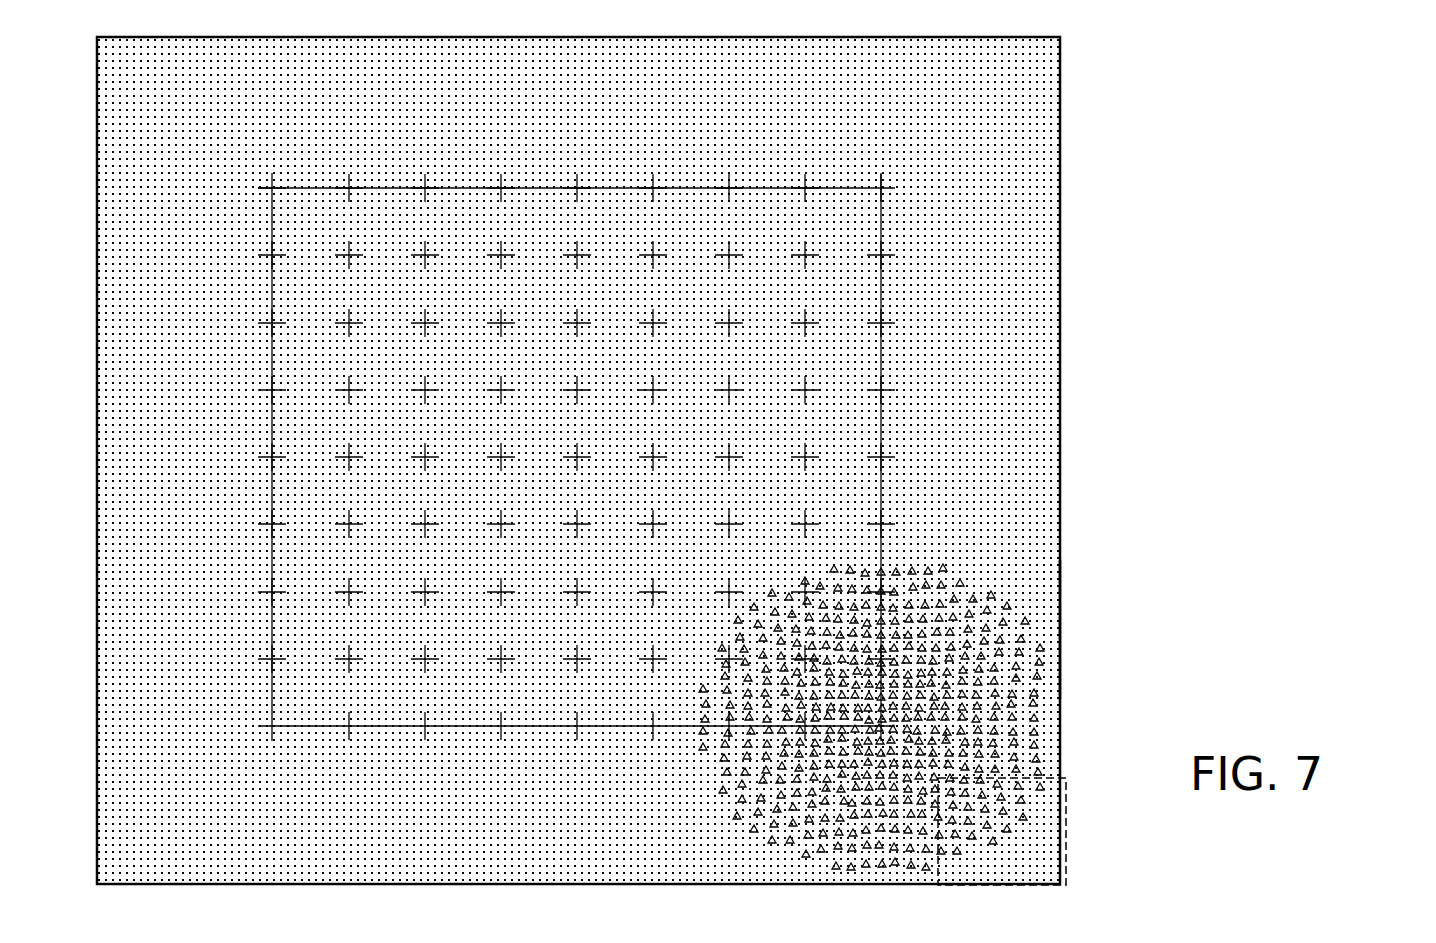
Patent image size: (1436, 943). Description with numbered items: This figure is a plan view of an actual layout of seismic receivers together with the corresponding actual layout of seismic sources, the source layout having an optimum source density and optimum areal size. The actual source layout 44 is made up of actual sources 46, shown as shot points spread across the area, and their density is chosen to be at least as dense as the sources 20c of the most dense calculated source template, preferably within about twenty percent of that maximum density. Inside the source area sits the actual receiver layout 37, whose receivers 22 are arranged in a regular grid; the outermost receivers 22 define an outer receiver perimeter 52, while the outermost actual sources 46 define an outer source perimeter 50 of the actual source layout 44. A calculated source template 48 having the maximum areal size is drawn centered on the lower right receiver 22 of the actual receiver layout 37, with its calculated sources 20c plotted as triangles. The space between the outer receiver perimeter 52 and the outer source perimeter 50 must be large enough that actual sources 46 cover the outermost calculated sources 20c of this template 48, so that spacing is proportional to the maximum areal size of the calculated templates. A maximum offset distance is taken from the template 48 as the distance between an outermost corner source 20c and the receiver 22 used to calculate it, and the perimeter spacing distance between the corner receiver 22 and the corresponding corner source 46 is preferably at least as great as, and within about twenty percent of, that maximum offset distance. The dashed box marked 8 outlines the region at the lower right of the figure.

The actual source layout 44 is at (748, 460).
The actual sources 46 is at (1068, 374).
The actual receiver layout 37 is at (835, 411).
The outer receiver perimeter 52 is at (882, 546).
The receiver 22 is at (1150, 93).
The calculated source template 48 is at (1053, 540).
The sources 20c is at (1003, 710).
The outer source perimeter 50 is at (1061, 632).
The detail region shown in FIG. 8 is at (1062, 830).